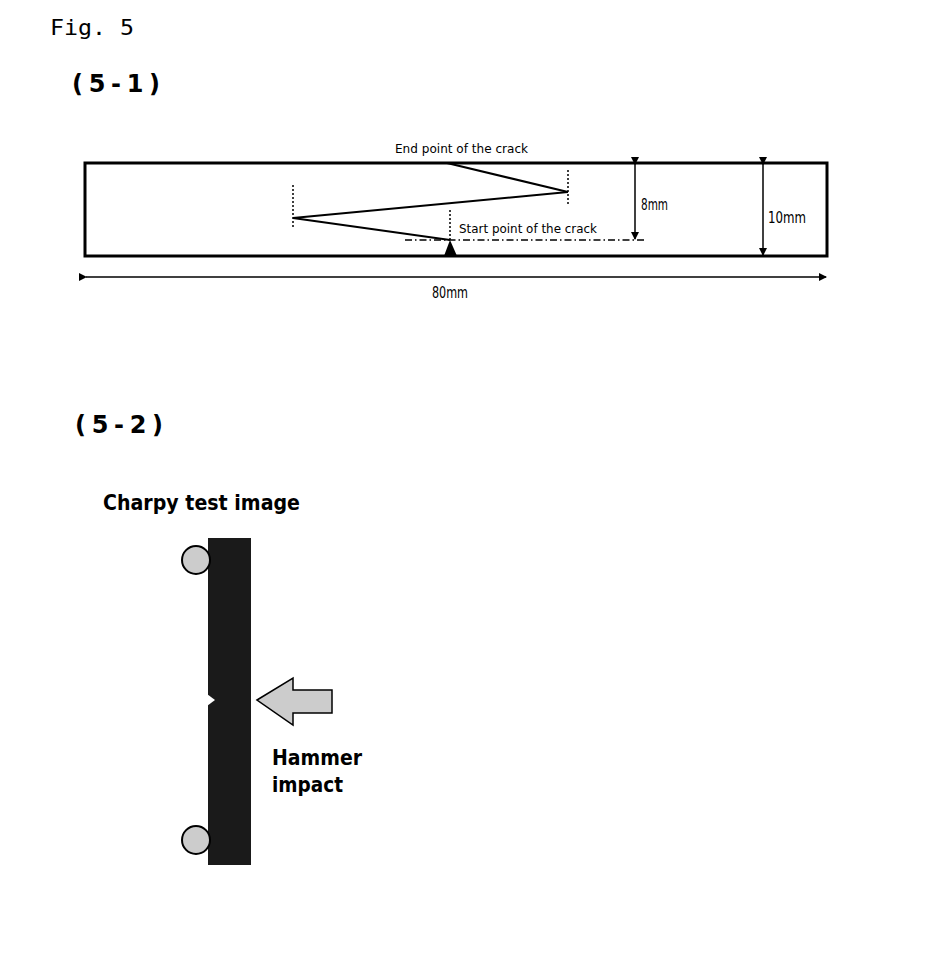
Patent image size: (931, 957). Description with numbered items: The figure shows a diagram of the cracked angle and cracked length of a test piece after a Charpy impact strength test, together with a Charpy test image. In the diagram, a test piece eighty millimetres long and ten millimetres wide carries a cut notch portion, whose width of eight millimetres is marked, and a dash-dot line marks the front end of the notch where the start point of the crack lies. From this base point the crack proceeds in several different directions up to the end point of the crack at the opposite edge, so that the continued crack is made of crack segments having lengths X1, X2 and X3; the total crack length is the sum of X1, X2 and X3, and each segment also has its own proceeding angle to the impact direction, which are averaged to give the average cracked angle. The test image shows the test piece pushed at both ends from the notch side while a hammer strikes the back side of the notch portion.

The cracked length of the first crack X1 is at (371, 229).
The cracked length of the second crack X2 is at (430, 205).
The cracked length of the third crack X3 is at (507, 177).